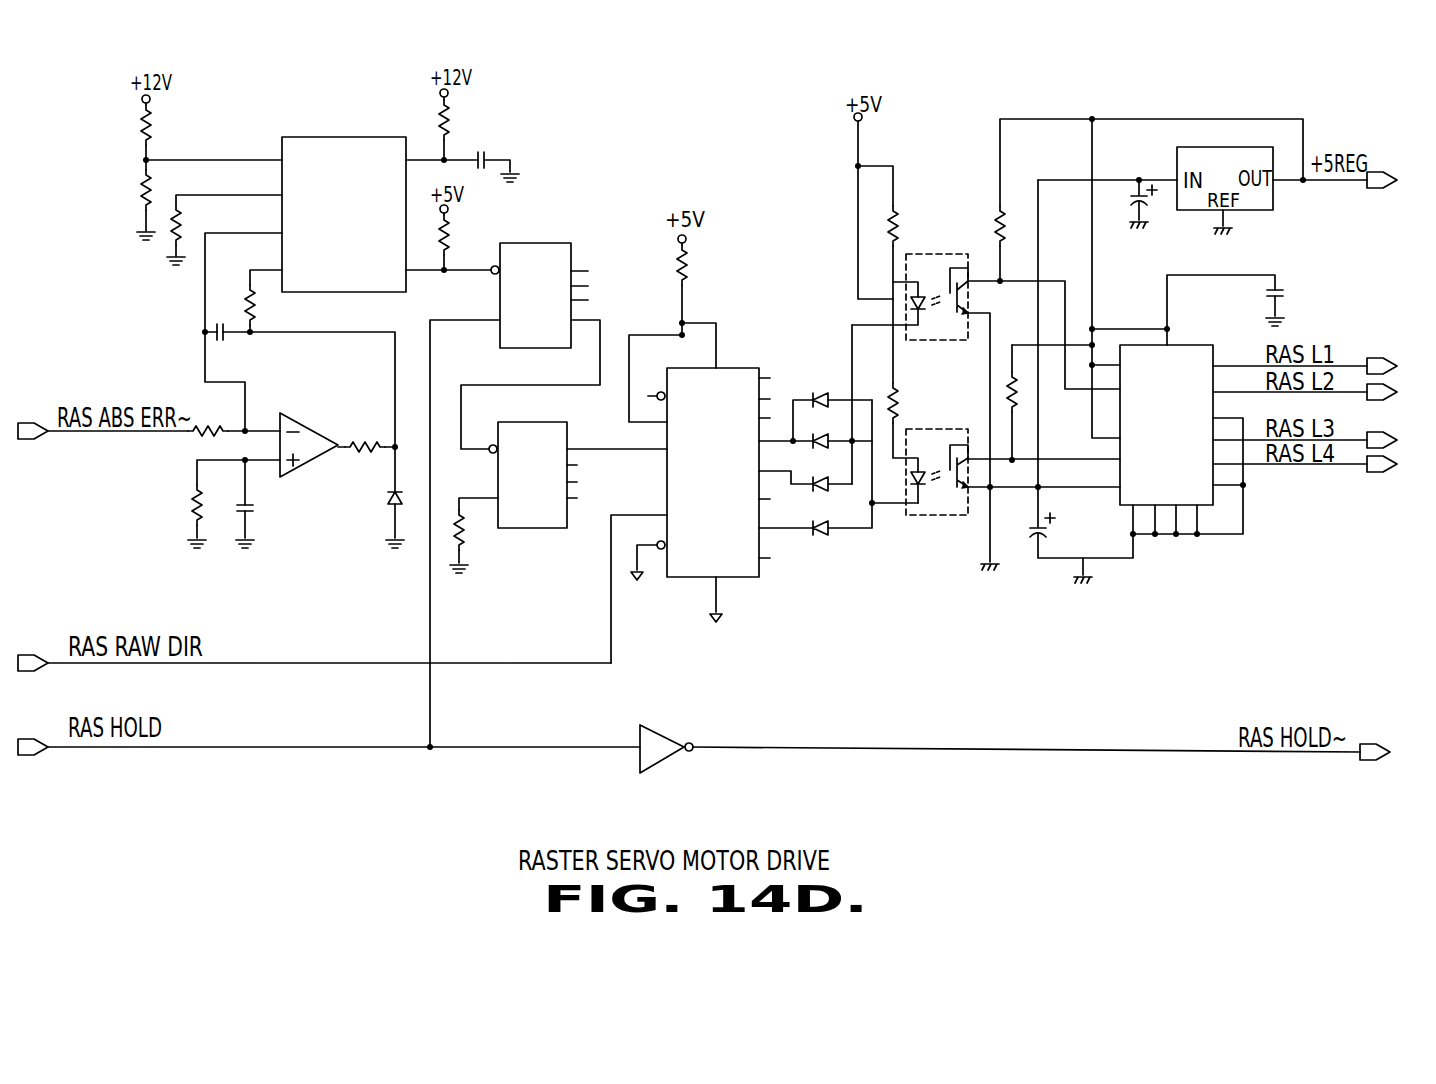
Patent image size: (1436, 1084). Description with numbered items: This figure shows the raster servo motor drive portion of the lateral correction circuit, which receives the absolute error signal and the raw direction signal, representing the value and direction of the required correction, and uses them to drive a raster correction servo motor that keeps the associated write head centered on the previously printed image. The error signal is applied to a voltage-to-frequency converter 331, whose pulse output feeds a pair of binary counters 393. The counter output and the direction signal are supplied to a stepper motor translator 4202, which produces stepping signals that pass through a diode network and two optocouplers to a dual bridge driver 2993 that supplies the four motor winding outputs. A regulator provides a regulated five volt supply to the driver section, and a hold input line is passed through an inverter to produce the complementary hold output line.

The LM331 voltage-to-frequency converter 331 is at (344, 199).
The 74LS393 binary counter 393 is at (543, 373).
The UCN4202 stepper motor translator/driver 4202 is at (734, 457).
The UND2993 dual full-bridge driver 2993 is at (1185, 411).